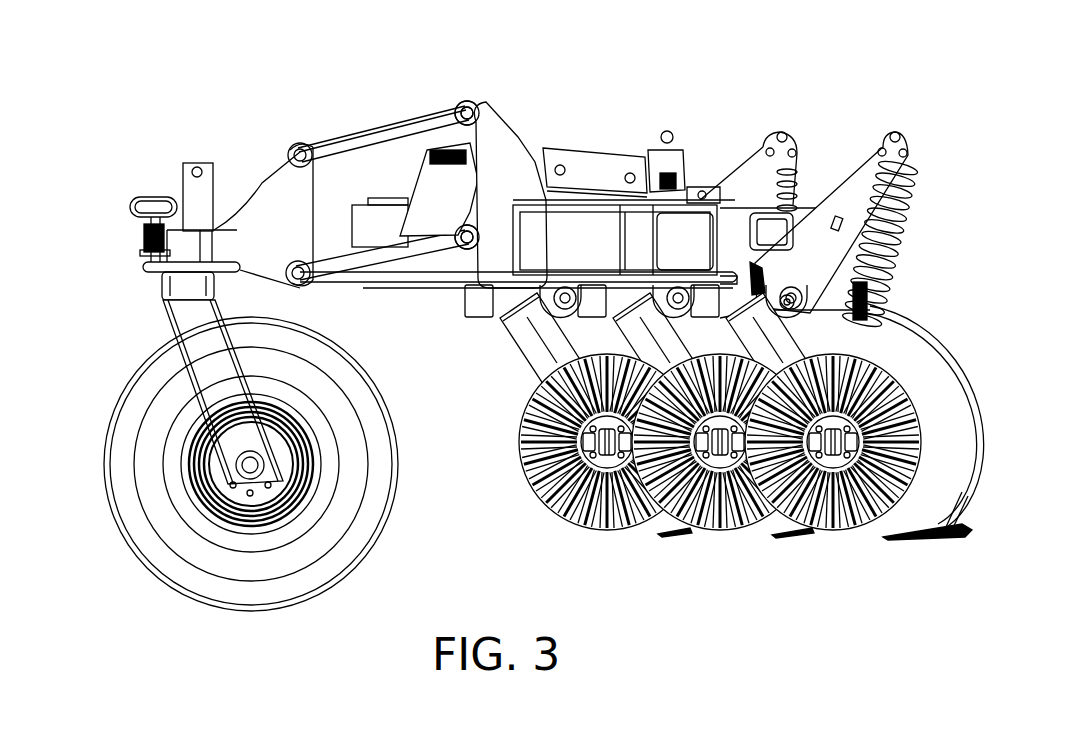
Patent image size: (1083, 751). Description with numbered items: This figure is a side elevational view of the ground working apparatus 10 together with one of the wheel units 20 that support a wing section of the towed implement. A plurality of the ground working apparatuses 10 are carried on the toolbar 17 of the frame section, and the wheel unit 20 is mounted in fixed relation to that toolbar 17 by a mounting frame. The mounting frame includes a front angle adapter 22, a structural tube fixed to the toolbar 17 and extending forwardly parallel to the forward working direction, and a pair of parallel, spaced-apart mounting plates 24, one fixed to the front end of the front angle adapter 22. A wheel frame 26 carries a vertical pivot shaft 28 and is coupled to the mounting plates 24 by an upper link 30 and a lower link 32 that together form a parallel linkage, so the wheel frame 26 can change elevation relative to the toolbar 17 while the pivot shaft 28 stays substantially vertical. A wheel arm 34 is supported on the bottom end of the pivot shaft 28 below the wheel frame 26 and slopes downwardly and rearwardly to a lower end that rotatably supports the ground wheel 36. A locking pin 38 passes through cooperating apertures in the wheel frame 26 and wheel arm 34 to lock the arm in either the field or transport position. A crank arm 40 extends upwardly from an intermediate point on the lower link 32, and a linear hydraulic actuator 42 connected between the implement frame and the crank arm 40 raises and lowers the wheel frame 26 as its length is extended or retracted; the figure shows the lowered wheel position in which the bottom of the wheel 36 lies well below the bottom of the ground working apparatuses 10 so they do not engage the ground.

The ground working apparatus 10 is at (672, 582).
The toolbar 17 is at (688, 235).
The wheel unit 20 is at (273, 70).
The front angle adapter 22 is at (583, 225).
The mounting plates 24 is at (497, 140).
The wheel frame 26 is at (248, 207).
The vertical pivot shaft 28 is at (190, 193).
The upper link 30 is at (342, 138).
The lower link 32 is at (338, 263).
The wheel arm 34 is at (190, 327).
The ground wheel 36 is at (345, 556).
The locking pin 38 is at (147, 238).
The crank arm 40 is at (433, 197).
The linear hydraulic actuator 42 is at (578, 230).